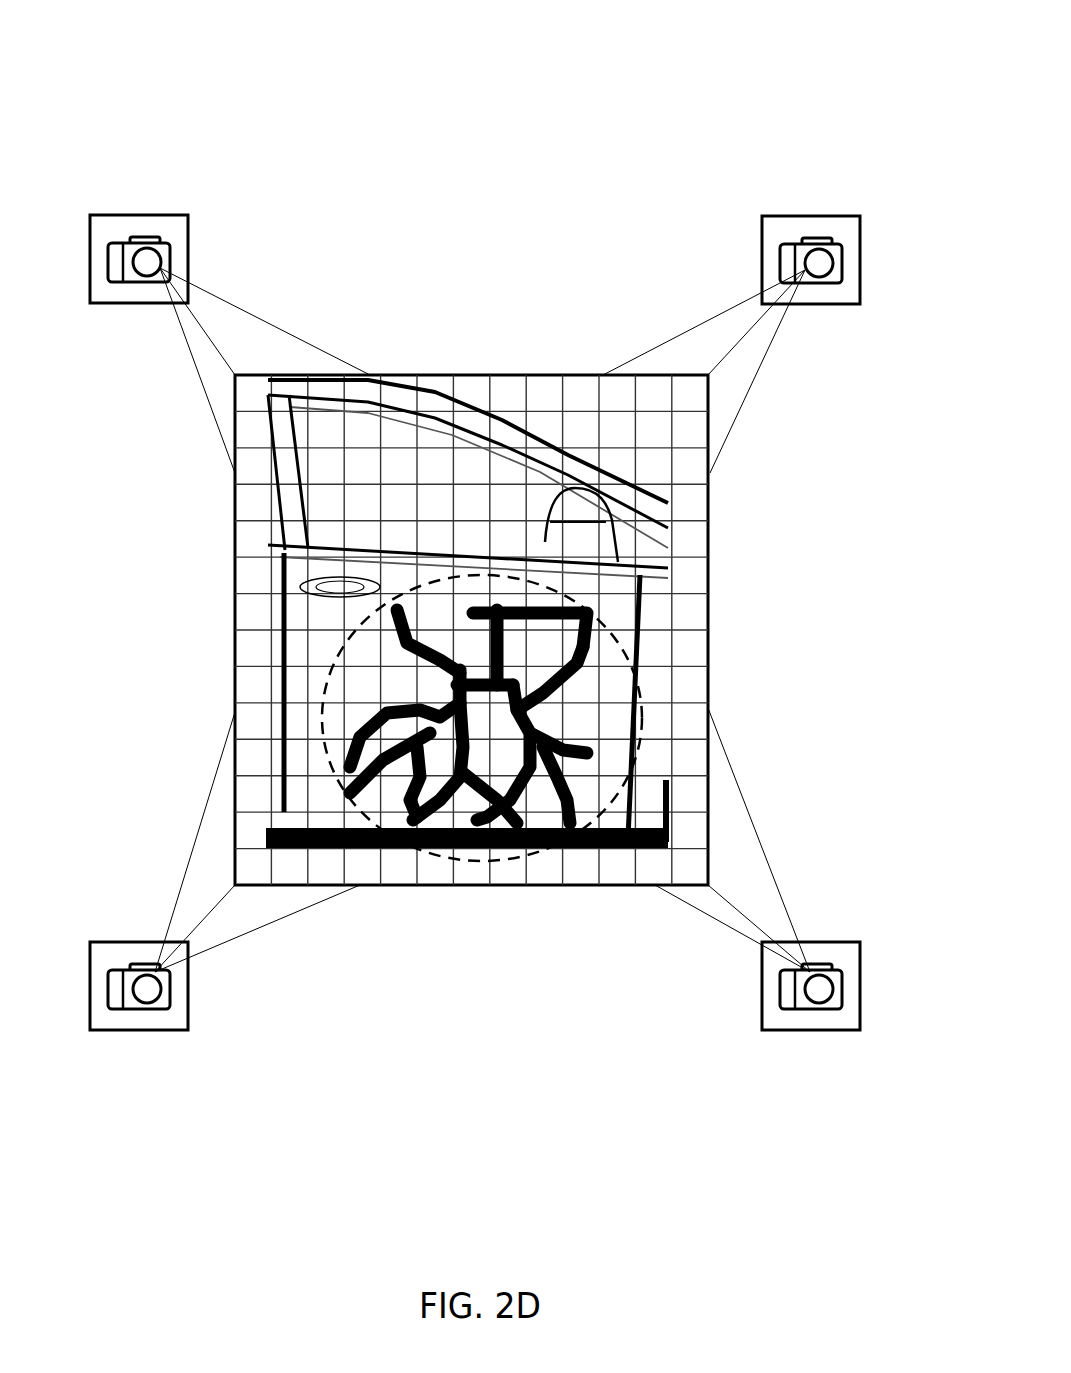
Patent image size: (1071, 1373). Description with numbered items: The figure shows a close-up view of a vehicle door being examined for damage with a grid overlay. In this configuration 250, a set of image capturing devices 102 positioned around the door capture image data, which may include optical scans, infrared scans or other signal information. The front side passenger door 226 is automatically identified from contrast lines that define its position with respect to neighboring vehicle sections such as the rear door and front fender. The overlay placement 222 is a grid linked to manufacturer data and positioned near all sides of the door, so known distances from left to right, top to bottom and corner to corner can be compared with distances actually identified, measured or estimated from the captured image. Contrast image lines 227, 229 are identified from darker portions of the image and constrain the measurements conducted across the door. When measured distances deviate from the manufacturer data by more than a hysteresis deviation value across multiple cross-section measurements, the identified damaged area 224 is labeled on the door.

The configuration 250 is at (77, 48).
The image capturing devices 102 is at (799, 325).
The overlay placement 222 is at (716, 636).
The identified damaged area 224 is at (470, 875).
The front side passenger door 226 is at (396, 388).
The contrast image line 227 is at (276, 684).
The contrast image line 229 is at (650, 598).